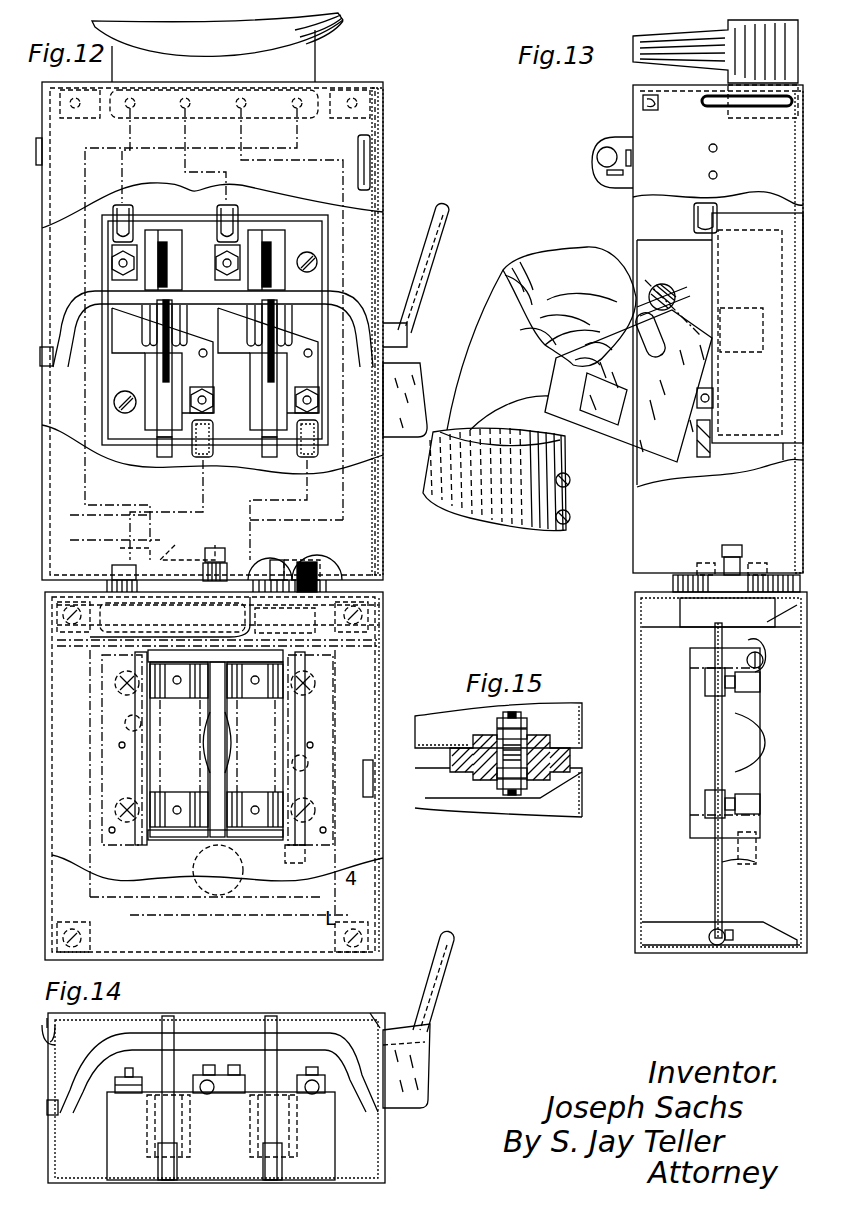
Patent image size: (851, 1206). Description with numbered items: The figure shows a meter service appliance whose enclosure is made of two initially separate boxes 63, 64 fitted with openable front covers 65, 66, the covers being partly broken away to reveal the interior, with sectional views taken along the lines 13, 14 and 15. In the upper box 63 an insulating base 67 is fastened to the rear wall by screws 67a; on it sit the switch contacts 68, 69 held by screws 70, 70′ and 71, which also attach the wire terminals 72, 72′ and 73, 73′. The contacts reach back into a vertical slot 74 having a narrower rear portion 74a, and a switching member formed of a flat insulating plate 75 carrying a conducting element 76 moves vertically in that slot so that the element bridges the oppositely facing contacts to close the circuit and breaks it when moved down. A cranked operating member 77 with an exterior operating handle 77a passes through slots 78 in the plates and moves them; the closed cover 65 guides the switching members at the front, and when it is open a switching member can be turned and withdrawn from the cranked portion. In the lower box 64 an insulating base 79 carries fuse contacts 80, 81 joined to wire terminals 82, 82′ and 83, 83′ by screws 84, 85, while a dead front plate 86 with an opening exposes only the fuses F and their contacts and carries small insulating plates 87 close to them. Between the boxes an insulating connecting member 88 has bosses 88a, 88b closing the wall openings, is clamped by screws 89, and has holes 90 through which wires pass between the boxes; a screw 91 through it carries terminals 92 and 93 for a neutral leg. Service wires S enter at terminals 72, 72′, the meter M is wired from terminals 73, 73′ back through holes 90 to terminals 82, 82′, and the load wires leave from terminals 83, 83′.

In FIG. 12, the meter M is at (322, 34).
In FIG. 12, the service wires S is at (72, 525).
In FIG. 12, the fuse F is at (213, 756).
In FIG. 13, the fuse F is at (700, 751).
In FIG. 12, the section line 13— 13 is at (340, 585).
In FIG. 12, the section line 14— 14 is at (36, 485).
In FIG. 12, the section line 15— 15 is at (236, 510).
In FIG. 12, the upper box 63 is at (383, 224).
In FIG. 14, the upper box 63 is at (385, 1152).
In FIG. 13, the upper box 63 is at (640, 196).
In FIG. 15, the upper box 63 is at (582, 710).
In FIG. 12, the lower box 64 is at (383, 690).
In FIG. 13, the lower box 64 is at (745, 953).
In FIG. 15, the lower box 64 is at (582, 805).
In FIG. 12, the front cover 65 is at (383, 130).
In FIG. 14, the front cover 65 is at (385, 1005).
In FIG. 12, the front cover 66 is at (383, 903).
In FIG. 13, the front cover 66 is at (635, 893).
In FIG. 12, the insulating base 67 is at (282, 234).
In FIG. 14, the insulating base 67 is at (335, 1152).
In FIG. 13, the insulating base 67 is at (748, 214).
In FIG. 12, the screws 67a is at (312, 242).
In FIG. 12, the switch contact 68 is at (180, 332).
In FIG. 14, the switch contact 68 is at (192, 1082).
In FIG. 12, the switch contact 69 is at (142, 330).
In FIG. 14, the switch contact 69 is at (150, 1075).
In FIG. 12, the screw 70 is at (213, 400).
In FIG. 12, the screw 70′ is at (318, 398).
In FIG. 12, the screw 71 is at (112, 263).
In FIG. 12, the wire terminal 72 is at (213, 435).
In FIG. 14, the wire terminal 72 is at (212, 1093).
In FIG. 12, the wire terminal 72′ is at (318, 448).
In FIG. 14, the wire terminal 72′ is at (314, 1093).
In FIG. 13, the wire terminal 72′ is at (705, 460).
In FIG. 12, the wire terminal 73 is at (133, 212).
In FIG. 13, the wire terminal 73 is at (694, 215).
In FIG. 12, the wire terminal 73′ is at (246, 205).
In FIG. 12, the vertical slot 74 is at (182, 262).
In FIG. 12, the narrower rear portion of slot 74a is at (160, 240).
In FIG. 12, the flat plate 75 is at (160, 385).
In FIG. 14, the flat plate 75 is at (185, 1033).
In FIG. 13, the flat plate 75 is at (625, 443).
In FIG. 12, the conducting element 76 is at (157, 360).
In FIG. 14, the conducting element 76 is at (147, 1138).
In FIG. 13, the conducting element 76 is at (592, 397).
In FIG. 12, the cranked operating member 77 is at (312, 304).
In FIG. 14, the cranked operating member 77 is at (245, 1050).
In FIG. 13, the cranked operating member 77 is at (665, 284).
In FIG. 12, the operating handle 77a is at (432, 244).
In FIG. 14, the operating handle 77a is at (437, 988).
In FIG. 12, the slot 78 is at (167, 285).
In FIG. 13, the slot 78 is at (660, 356).
In FIG. 13, the insulating base 79 is at (780, 845).
In FIG. 12, the fuse contact 80 is at (177, 698).
In FIG. 13, the fuse contact 80 is at (705, 682).
In FIG. 12, the fuse contact 81 is at (177, 784).
In FIG. 13, the fuse contact 81 is at (705, 804).
In FIG. 12, the wire terminal 82 is at (115, 678).
In FIG. 12, the wire terminal 82′ is at (315, 683).
In FIG. 13, the wire terminal 82′ is at (760, 668).
In FIG. 12, the wire terminal 83 is at (105, 870).
In FIG. 12, the wire terminal 83′ is at (285, 856).
In FIG. 13, the wire terminal 83′ is at (722, 862).
In FIG. 12, the screw 84 is at (127, 695).
In FIG. 13, the screw 84 is at (742, 723).
In FIG. 12, the screw 85 is at (115, 810).
In FIG. 12, the dead front plate 86 is at (372, 830).
In FIG. 13, the dead front plate 86 is at (722, 890).
In FIG. 12, the insulating plates 87 is at (135, 752).
In FIG. 13, the insulating plates 87 is at (722, 785).
In FIG. 12, the insulating connecting member 88 is at (318, 572).
In FIG. 13, the insulating connecting member 88 is at (790, 572).
In FIG. 15, the insulating connecting member 88 is at (570, 762).
In FIG. 12, the upward projecting boss 88a is at (302, 550).
In FIG. 13, the upward projecting boss 88a is at (706, 563).
In FIG. 15, the upward projecting boss 88a is at (497, 736).
In FIG. 12, the downward projecting boss 88b is at (278, 632).
In FIG. 13, the downward projecting boss 88b is at (780, 618).
In FIG. 15, the downward projecting boss 88b is at (497, 785).
In FIG. 12, the screws 89 is at (110, 565).
In FIG. 12, the holes 90 is at (125, 545).
In FIG. 13, the holes 90 is at (757, 563).
In FIG. 15, the holes 90 is at (527, 735).
In FIG. 12, the screw 91 is at (215, 548).
In FIG. 13, the screw 91 is at (732, 545).
In FIG. 15, the screw 91 is at (521, 716).
In FIG. 12, the wire terminal 92 is at (175, 542).
In FIG. 12, the wire terminal 93 is at (126, 633).